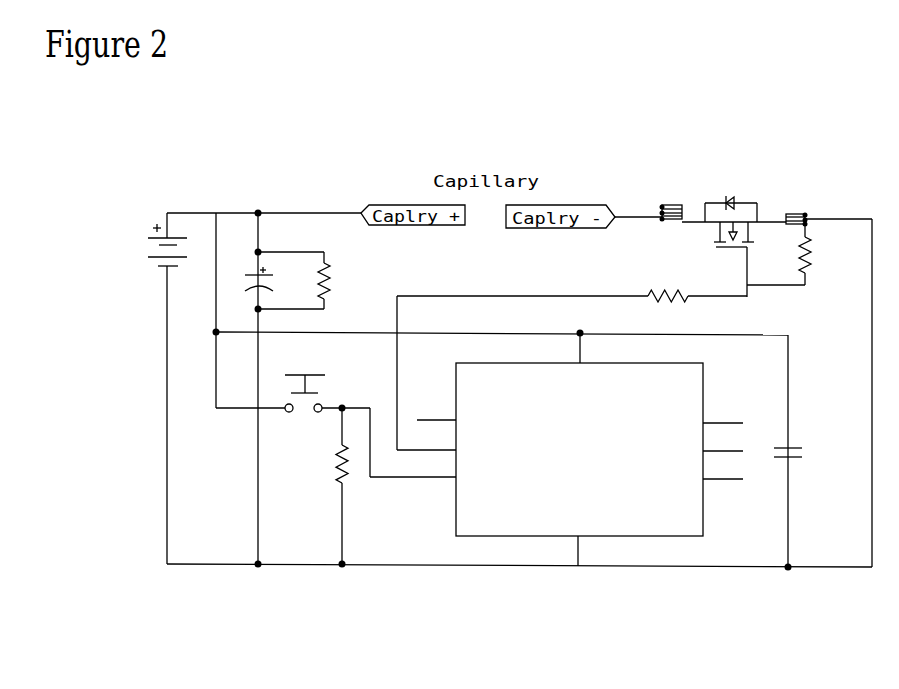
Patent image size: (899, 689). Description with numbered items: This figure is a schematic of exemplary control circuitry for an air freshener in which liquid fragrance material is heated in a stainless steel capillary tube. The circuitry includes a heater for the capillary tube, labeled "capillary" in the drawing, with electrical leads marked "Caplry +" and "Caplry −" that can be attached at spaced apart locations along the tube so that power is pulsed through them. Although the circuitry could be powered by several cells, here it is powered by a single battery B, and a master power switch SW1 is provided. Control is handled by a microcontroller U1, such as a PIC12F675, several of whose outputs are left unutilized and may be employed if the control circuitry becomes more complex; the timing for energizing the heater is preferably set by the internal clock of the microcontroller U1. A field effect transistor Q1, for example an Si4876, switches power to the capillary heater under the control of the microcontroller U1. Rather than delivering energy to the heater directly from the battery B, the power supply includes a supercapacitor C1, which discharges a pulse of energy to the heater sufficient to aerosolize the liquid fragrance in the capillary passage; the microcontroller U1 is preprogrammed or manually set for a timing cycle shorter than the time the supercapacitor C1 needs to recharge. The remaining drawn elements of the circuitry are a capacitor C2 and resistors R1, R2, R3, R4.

The battery B is at (127, 388).
The supercapacitor C1 is at (277, 286).
The resistor R1 is at (344, 280).
The resistor R2 is at (668, 297).
The resistor R3 is at (817, 254).
The resistor R4 is at (327, 486).
The master power switch SW1 is at (305, 404).
The field effect transistor Q1 is at (734, 223).
The capacitor C2 is at (807, 457).
The microcontroller U1 is at (579, 451).